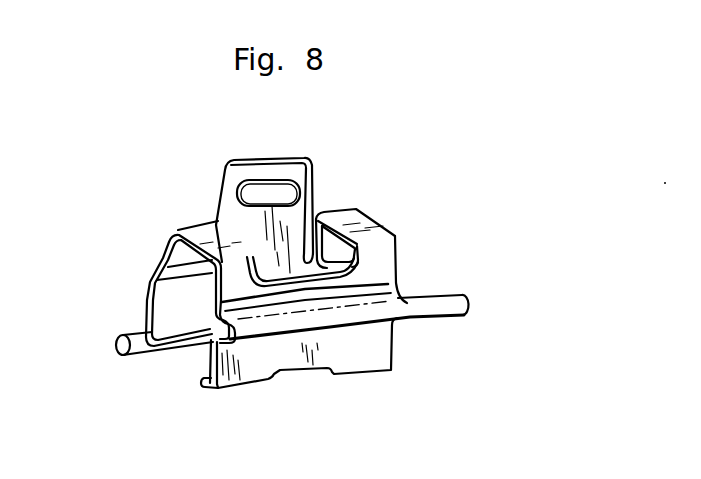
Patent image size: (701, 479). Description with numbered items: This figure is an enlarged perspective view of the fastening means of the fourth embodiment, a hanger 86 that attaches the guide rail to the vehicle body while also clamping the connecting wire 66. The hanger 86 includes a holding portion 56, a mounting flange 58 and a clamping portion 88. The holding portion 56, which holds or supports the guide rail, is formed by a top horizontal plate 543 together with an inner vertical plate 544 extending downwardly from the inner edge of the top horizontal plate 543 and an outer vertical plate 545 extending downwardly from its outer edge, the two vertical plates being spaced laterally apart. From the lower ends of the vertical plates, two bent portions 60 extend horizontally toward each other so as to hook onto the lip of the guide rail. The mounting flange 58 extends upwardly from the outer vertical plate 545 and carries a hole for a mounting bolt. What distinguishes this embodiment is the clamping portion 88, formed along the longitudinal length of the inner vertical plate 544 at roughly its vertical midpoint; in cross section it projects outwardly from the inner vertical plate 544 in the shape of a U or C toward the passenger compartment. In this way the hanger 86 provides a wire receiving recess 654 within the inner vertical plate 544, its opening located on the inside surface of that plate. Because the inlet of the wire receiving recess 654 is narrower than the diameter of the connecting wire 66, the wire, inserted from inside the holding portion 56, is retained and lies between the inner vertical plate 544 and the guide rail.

The holding portion 56 is at (248, 370).
The mounting flange 58 is at (313, 164).
The bent portion 60 is at (160, 343).
The connecting wire 66 is at (458, 318).
The hanger 86 is at (389, 206).
The clamping portion 88 is at (356, 316).
The top horizontal plate 543 is at (372, 221).
The inner vertical plate 544 is at (388, 272).
The outer vertical plate 545 is at (172, 287).
The wire receiving recess 654 is at (200, 325).